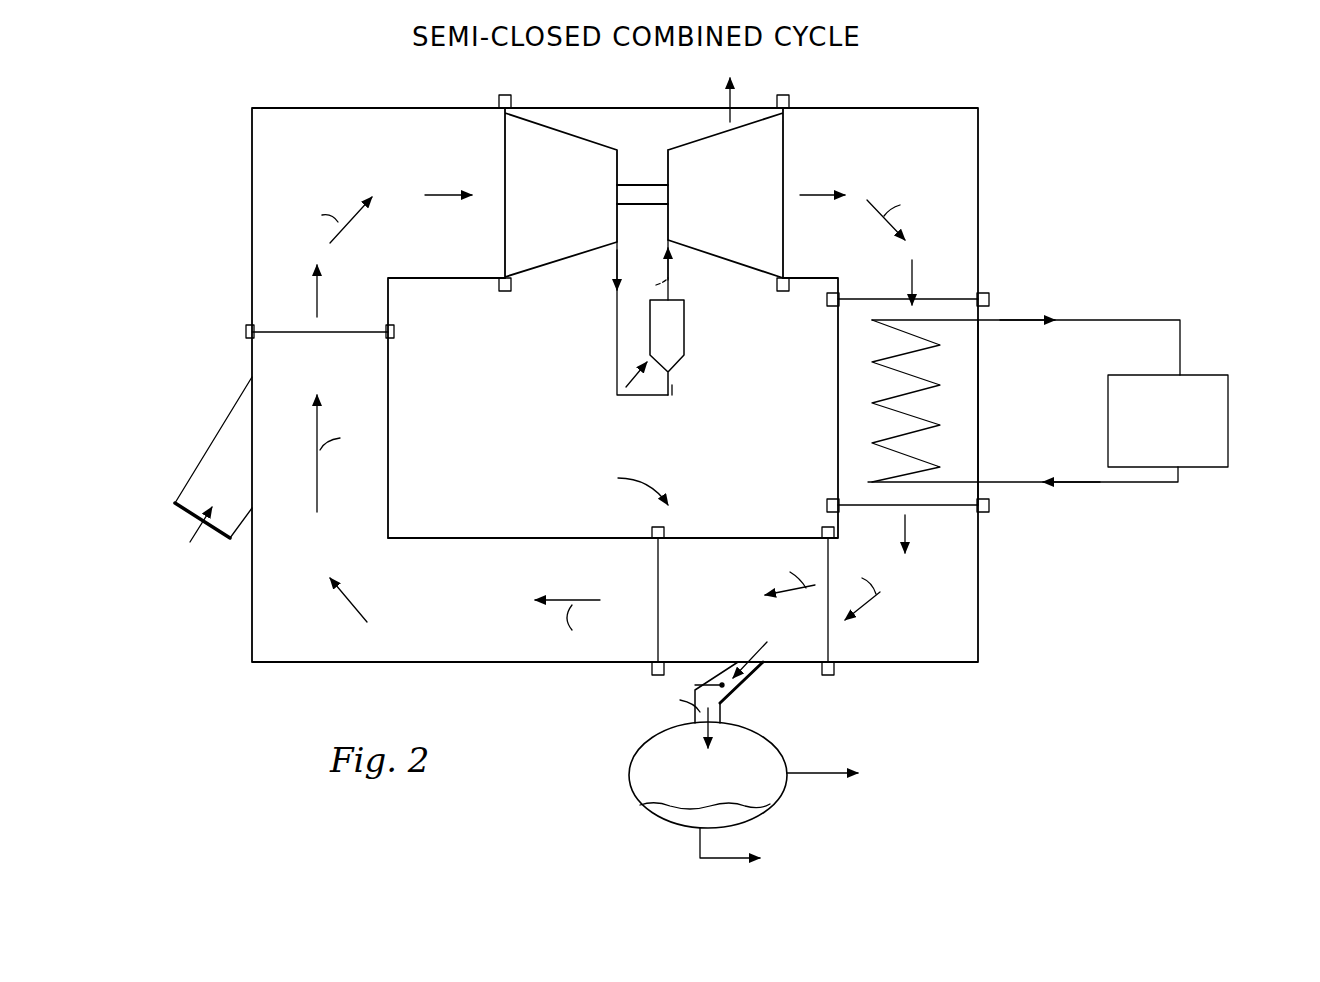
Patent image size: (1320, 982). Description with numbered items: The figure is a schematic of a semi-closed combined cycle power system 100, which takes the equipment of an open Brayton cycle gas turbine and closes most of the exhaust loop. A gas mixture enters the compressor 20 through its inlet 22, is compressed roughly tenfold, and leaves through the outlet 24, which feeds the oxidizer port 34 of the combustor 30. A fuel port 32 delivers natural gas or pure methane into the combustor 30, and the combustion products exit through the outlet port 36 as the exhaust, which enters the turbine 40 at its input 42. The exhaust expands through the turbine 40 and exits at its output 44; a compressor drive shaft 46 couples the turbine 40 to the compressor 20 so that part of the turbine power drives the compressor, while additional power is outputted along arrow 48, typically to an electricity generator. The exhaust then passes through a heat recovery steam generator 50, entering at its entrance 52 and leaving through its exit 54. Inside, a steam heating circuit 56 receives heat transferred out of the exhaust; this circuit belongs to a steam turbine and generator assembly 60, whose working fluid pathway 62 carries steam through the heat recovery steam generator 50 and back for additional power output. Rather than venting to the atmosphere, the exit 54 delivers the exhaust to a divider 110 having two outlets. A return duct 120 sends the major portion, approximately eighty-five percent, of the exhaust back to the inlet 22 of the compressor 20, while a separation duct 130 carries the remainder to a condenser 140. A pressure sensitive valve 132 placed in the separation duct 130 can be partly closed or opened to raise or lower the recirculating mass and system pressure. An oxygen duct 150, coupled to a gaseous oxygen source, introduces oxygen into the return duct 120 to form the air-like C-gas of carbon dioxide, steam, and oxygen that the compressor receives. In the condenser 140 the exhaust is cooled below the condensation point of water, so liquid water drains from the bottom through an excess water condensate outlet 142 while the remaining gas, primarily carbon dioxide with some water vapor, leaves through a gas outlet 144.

The semi-closed combined cycle power system 100 is at (1000, 100).
The compressor 20 is at (588, 122).
The inlet 22 is at (492, 130).
The outlet 24 is at (612, 262).
The combustor 30 is at (720, 400).
The fuel port 32 is at (636, 395).
The oxidizer port 34 is at (672, 390).
The outlet port 36 is at (670, 296).
The turbine 40 is at (680, 122).
The input 42 is at (664, 264).
The output 44 is at (786, 135).
The compressor drive shaft 46 is at (655, 155).
The arrow 48 is at (728, 108).
The heat recovery steam generator 50 is at (806, 442).
The entrance 52 is at (978, 290).
The exit 54 is at (960, 508).
The steam heating circuit 56 is at (916, 378).
The steam turbine and generator assembly 60 is at (1205, 365).
The working fluid pathway 62 is at (1140, 486).
The divider 110 is at (622, 485).
The return duct 120 is at (540, 537).
The separation duct 130 is at (745, 688).
The pressure sensitive valve 132 is at (720, 684).
The condenser 140 is at (628, 745).
The excess water condensate outlet 142 is at (812, 776).
The gas outlet 144 is at (698, 842).
The oxygen duct 150 is at (222, 428).